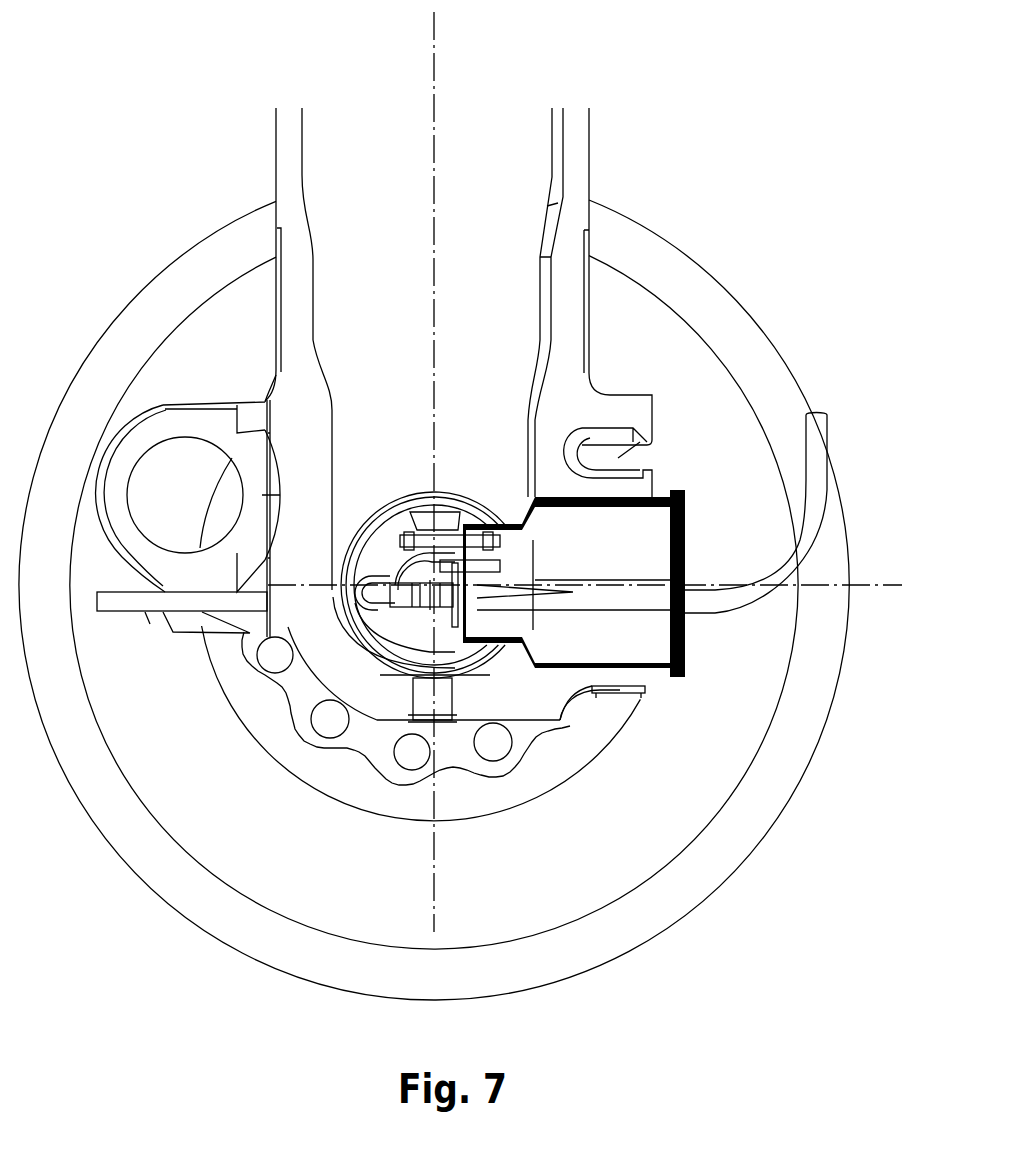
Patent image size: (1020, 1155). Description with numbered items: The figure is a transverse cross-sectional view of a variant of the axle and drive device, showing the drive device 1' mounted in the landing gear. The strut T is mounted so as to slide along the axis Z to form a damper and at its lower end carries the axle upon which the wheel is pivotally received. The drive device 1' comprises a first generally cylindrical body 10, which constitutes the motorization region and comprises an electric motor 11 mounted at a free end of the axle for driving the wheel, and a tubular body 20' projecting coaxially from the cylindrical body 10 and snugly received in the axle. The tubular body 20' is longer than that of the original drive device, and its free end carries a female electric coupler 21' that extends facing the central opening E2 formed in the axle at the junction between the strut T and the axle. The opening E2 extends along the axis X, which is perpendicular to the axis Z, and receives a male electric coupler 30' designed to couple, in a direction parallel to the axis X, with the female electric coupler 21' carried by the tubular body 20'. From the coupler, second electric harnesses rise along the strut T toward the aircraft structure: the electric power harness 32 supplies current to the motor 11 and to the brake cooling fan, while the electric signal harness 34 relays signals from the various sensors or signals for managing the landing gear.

The axis Z is at (434, 20).
The axis X is at (890, 584).
The strut T is at (575, 170).
The drive device 1' is at (837, 177).
The first generally cylindrical body 10 is at (738, 340).
The electric motor 11 is at (472, 602).
The tubular body 20' is at (423, 551).
The female electric coupler 21' is at (416, 569).
The male electric coupler 30' is at (622, 581).
The electric power harness 32 is at (140, 603).
The electric signal harness 34 is at (812, 442).
The central opening E2 is at (644, 678).